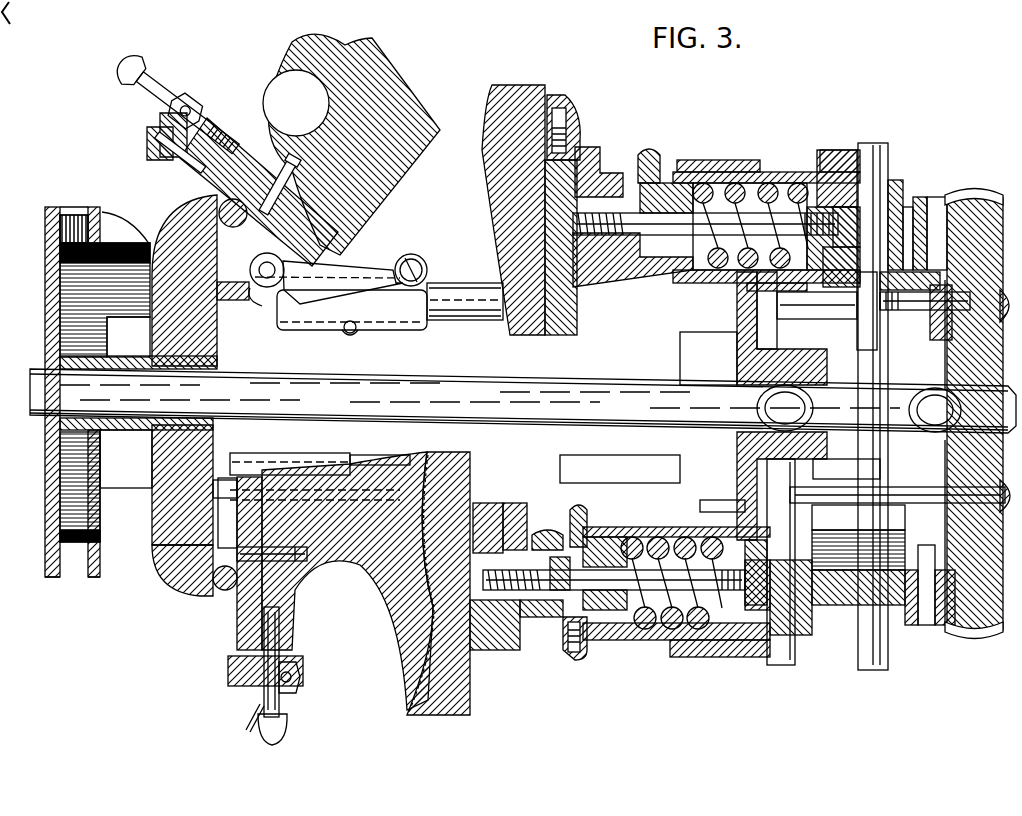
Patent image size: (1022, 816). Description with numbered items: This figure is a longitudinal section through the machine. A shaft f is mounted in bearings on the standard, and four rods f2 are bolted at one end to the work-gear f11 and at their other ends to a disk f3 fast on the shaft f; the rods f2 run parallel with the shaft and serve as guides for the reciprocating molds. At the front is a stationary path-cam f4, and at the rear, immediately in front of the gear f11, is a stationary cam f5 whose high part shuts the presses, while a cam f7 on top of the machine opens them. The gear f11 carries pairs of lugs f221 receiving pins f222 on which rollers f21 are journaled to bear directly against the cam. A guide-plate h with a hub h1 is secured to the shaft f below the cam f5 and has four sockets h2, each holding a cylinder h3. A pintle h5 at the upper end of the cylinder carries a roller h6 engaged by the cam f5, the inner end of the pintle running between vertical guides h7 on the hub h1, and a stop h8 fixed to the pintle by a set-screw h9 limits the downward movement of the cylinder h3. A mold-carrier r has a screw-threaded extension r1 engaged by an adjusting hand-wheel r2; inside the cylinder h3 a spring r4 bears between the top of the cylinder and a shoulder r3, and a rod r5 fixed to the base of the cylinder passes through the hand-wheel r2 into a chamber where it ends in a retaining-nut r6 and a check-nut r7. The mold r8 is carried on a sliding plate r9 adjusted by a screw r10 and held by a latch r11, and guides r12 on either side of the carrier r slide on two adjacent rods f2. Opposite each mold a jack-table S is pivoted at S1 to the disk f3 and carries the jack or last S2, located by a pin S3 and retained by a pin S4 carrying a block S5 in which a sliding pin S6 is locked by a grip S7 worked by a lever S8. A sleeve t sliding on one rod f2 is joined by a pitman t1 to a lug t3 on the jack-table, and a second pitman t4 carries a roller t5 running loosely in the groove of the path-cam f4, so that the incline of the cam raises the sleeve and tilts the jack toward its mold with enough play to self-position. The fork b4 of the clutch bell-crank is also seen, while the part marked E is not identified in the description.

The frame bracket E is at (97, 379).
The shaft f is at (523, 401).
The rods f2 is at (452, 285).
The disk f3 is at (200, 590).
The stationary path-cam f4 is at (62, 240).
The stationary cam f5 is at (880, 608).
The cam f7 is at (848, 150).
The work-gear f11 is at (978, 640).
The rollers f21 is at (937, 197).
The lugs f221 is at (918, 197).
The pins f222 is at (945, 280).
The sleeve t is at (390, 312).
The pitman t1 is at (395, 268).
The lug t3 is at (302, 326).
The pitman t4 is at (160, 228).
The roller t5 is at (126, 402).
The jack-table S is at (238, 612).
The pivot S1 is at (218, 205).
The jack or last S2 is at (340, 88).
The pin S3 is at (258, 140).
The pin S4 is at (145, 145).
The block S5 is at (160, 125).
The sliding pin S6 is at (150, 70).
The grip S7 is at (188, 95).
The lever S8 is at (246, 728).
The mold-carrier r is at (512, 185).
The screw-threaded extension r1 is at (595, 180).
The adjusting-wheel r2 is at (665, 172).
The shoulder r3 is at (688, 158).
The spring r4 is at (752, 215).
The rod r5 is at (788, 213).
The retaining-nut r6 is at (650, 145).
The check-nut r7 is at (580, 245).
The mold r8 is at (518, 86).
The sliding plate r9 is at (552, 100).
The screw r10 is at (575, 120).
The latch r11 is at (566, 100).
The guide r12 is at (486, 503).
The guide-plate h is at (740, 432).
The hub h1 is at (840, 470).
The sockets h2 is at (720, 160).
The cylinder h3 is at (825, 150).
The pintle h5 is at (872, 143).
The roller h6 is at (900, 180).
The vertical guides h7 is at (859, 352).
The stop h8 is at (700, 502).
The set-screw h9 is at (868, 320).
The fork b4 is at (828, 640).